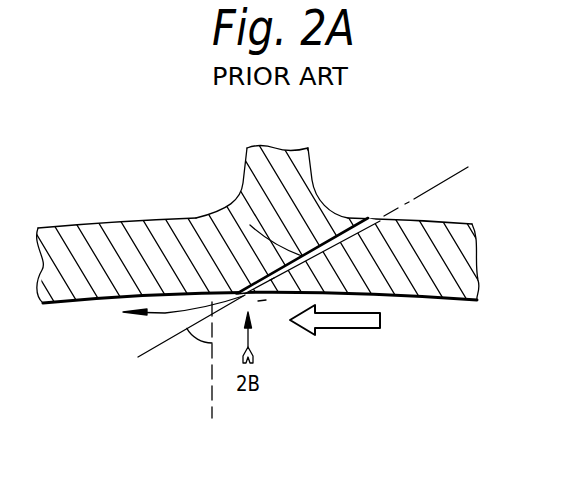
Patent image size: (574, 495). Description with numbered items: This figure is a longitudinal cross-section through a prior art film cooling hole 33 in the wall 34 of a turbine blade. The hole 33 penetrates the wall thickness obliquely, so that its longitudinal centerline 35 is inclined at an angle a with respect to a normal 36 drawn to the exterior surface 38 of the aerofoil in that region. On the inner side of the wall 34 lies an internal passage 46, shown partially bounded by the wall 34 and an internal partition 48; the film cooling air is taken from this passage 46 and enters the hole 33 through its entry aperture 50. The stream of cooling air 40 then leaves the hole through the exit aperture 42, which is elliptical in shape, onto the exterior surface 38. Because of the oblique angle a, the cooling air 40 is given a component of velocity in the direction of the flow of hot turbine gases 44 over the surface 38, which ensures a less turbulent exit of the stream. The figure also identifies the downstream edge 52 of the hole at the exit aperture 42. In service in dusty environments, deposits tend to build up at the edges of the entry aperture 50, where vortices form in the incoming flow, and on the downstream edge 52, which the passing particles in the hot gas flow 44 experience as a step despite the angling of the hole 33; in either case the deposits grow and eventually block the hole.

The film cooling hole 33 is at (250, 225).
The wall 34 is at (457, 250).
The longitudinal centerline 35 is at (437, 188).
The normal 36 is at (212, 400).
The exterior surface 38 is at (80, 303).
The stream of cooling air 40 is at (163, 313).
The exit aperture 42 is at (262, 302).
The flow of hot turbine gases 44 is at (355, 327).
The internal passage 46 is at (381, 129).
The internal partition 48 is at (245, 160).
The entry aperture 50 is at (370, 218).
The downstream edge 52 is at (240, 293).
The angle a is at (197, 345).